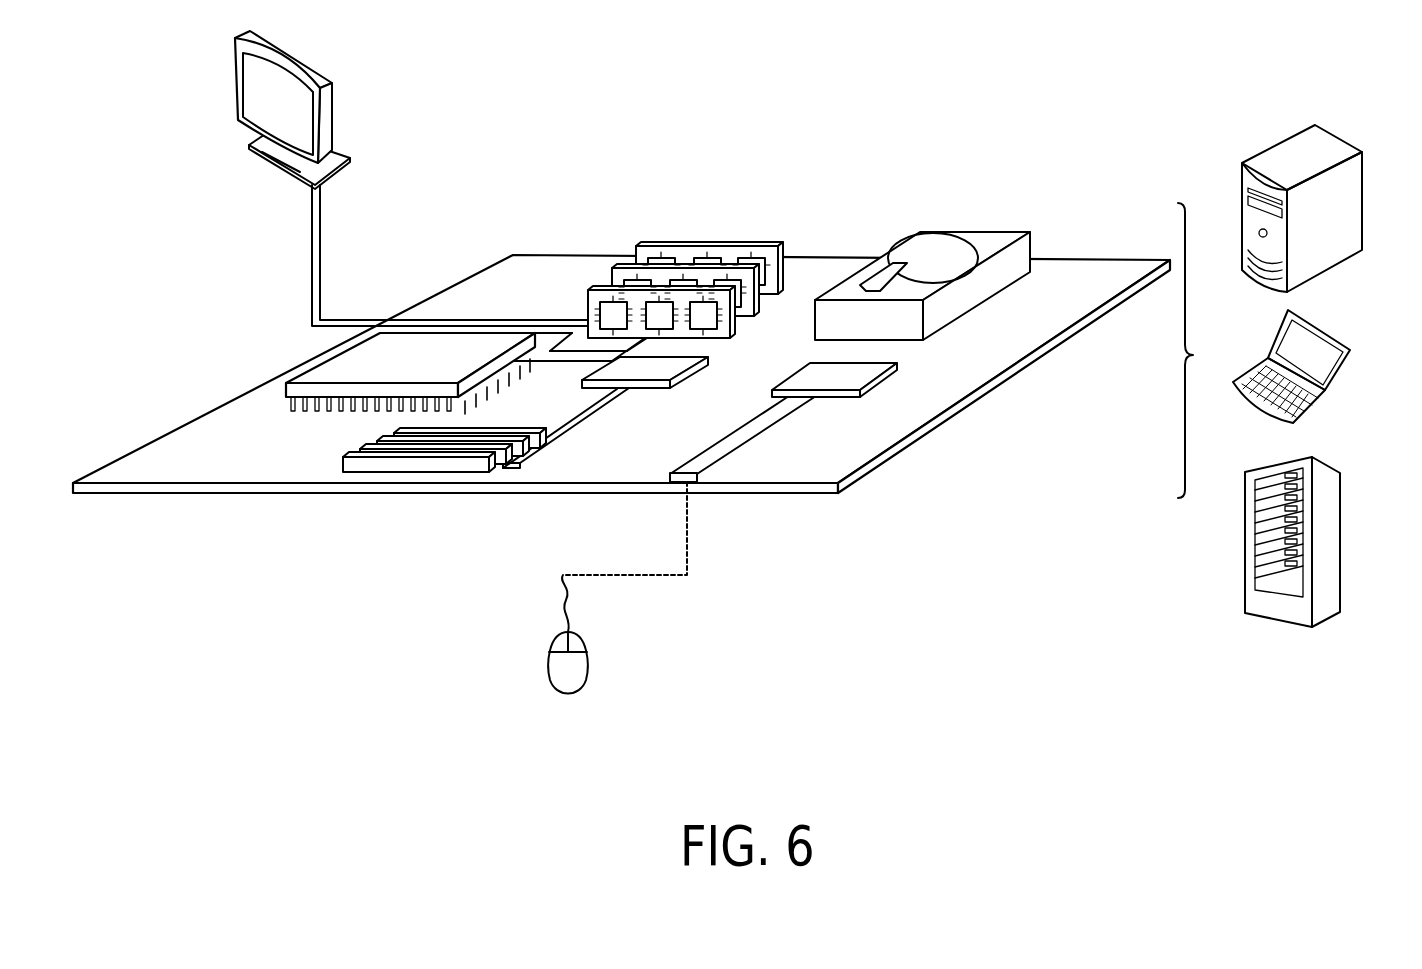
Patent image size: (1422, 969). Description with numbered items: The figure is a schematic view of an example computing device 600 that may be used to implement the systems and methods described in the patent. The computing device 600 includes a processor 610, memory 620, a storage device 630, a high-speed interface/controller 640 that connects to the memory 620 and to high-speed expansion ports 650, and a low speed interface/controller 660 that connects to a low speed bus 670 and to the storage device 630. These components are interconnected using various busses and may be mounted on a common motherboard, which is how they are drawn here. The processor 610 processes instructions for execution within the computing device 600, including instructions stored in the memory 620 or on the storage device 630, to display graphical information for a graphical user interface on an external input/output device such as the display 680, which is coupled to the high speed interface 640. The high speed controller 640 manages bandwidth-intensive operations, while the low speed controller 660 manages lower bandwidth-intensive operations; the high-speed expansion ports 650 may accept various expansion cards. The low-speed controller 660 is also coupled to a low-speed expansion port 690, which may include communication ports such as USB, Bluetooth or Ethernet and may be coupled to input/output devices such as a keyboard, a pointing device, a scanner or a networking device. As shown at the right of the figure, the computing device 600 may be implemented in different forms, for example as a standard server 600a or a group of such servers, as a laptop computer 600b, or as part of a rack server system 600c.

The computing device 600 is at (789, 108).
The standard server 600a is at (1272, 147).
The laptop computer 600b is at (1328, 333).
The rack server system 600c is at (1335, 520).
The processor 610 is at (284, 383).
The memory 620 is at (702, 247).
The storage device 630 is at (972, 232).
The high-speed interface/controller 640 is at (653, 390).
The high-speed expansion ports 650 is at (343, 458).
The low speed interface/controller 660 is at (822, 375).
The low speed bus 670 is at (773, 433).
The display 680 is at (236, 88).
The low-speed expansion port 690 is at (697, 483).